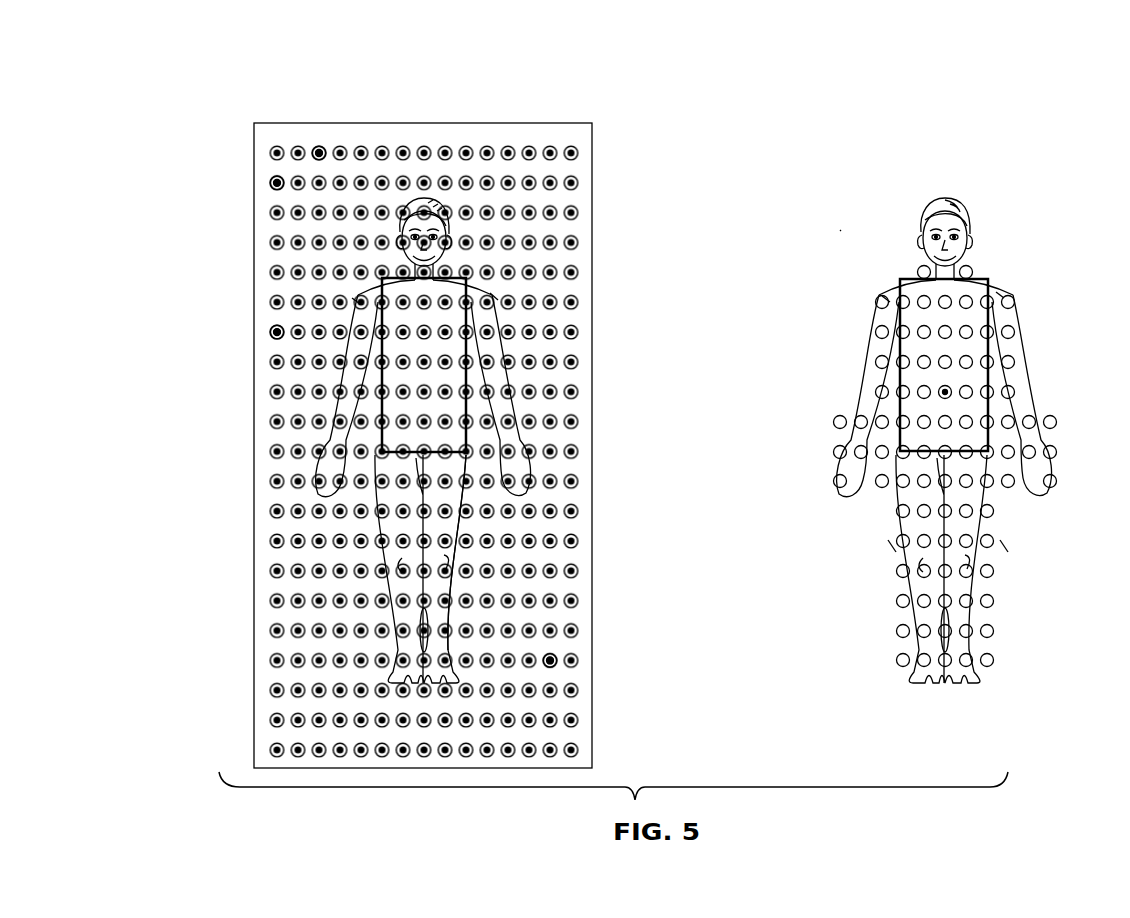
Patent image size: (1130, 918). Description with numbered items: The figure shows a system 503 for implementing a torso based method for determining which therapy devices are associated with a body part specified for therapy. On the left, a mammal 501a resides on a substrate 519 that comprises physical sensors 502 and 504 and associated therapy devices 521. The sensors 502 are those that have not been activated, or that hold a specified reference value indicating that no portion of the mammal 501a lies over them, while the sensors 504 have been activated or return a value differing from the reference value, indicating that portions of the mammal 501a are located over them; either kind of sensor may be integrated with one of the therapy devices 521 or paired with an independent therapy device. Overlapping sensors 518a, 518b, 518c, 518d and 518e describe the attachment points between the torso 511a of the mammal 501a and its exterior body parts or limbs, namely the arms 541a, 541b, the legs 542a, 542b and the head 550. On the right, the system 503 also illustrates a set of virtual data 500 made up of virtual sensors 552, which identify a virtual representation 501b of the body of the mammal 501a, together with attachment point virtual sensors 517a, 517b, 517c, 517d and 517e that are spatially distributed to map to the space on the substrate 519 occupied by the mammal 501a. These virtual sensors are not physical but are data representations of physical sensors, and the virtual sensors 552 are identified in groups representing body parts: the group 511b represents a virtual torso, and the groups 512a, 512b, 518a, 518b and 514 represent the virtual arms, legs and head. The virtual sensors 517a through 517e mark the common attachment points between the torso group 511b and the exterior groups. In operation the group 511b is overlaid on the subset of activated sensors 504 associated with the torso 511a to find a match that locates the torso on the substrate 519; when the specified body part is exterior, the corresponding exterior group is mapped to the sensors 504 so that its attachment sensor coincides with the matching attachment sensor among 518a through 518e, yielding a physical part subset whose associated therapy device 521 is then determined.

The set of virtual data 500 is at (838, 202).
The mammal 501a is at (415, 185).
The virtual representation of a body of the mammal 501b is at (937, 192).
The sensors 502 is at (321, 141).
The system 503 is at (755, 131).
The sensors 504 is at (458, 290).
The torso 511a is at (390, 272).
The group of virtual sensors representing a virtual torso 511b is at (990, 286).
The group of virtual sensors 512a is at (866, 367).
The group of virtual sensors 512b is at (1021, 352).
The group of virtual sensors 514 is at (947, 203).
The virtual sensor 517a is at (886, 298).
The virtual sensor 517b is at (921, 453).
The virtual sensor 517c is at (966, 453).
The virtual sensor 517d is at (1000, 294).
The virtual sensor 517e is at (948, 282).
The sensor 518a is at (355, 300).
The sensor 518b is at (395, 458).
The sensor 518c is at (458, 444).
The sensor 518d is at (495, 296).
The sensor 518e is at (428, 278).
The substrate 519 is at (580, 123).
The therapy devices 521 is at (318, 146).
The exterior body part 541a is at (335, 375).
The exterior body part 541b is at (497, 376).
The exterior body part 542a is at (385, 620).
The exterior body part 542b is at (464, 623).
The exterior body part 550 is at (424, 210).
The virtual sensors 552 is at (877, 393).